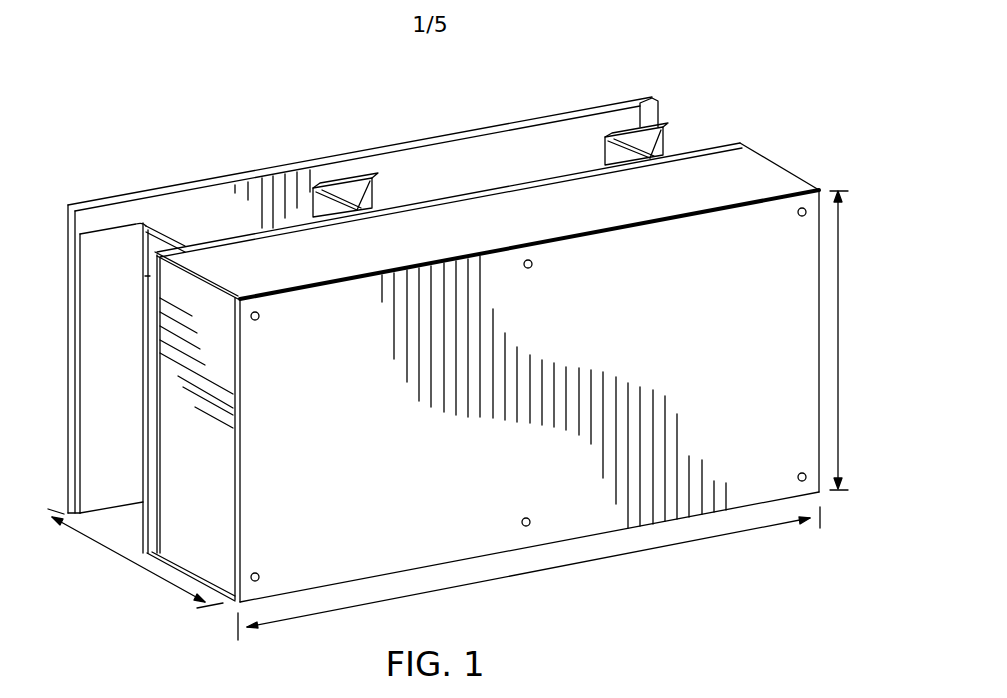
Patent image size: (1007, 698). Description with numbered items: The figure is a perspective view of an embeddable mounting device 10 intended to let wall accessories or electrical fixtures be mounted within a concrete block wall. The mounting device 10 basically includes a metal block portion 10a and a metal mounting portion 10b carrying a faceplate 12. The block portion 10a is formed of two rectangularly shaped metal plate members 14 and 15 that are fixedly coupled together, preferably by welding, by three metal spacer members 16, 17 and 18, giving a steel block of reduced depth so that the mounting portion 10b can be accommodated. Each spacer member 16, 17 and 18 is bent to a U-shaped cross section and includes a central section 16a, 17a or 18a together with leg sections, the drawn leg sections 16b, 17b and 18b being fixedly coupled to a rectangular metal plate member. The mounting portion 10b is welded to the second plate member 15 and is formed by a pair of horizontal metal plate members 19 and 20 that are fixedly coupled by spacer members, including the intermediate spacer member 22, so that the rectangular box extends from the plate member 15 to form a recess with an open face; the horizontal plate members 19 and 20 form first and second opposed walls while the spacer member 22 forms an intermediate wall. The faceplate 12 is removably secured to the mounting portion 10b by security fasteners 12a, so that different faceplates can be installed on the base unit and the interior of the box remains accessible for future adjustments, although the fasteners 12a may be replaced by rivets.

The embeddable mounting device 10 is at (706, 60).
The metal block portion 10a is at (753, 133).
The metal mounting portion 10b is at (833, 176).
The faceplate 12 is at (255, 449).
The security fasteners 12a is at (259, 320).
The first rectangularly shaped metal plate member 14 is at (212, 172).
The second rectangularly shaped metal plate member 15 is at (440, 192).
The metal spacer member 16 is at (163, 218).
The central section 16a is at (176, 236).
The first leg section 16b is at (103, 232).
The metal spacer member 17 is at (307, 192).
The central section 17a is at (357, 197).
The first leg section 17b is at (352, 182).
The metal spacer member 18 is at (594, 146).
The central section 18a is at (661, 130).
The first leg section 18b is at (637, 124).
The horizontal metal plate member 19 is at (372, 238).
The horizontal metal plate member 20 is at (200, 563).
The metal spacer member 22 is at (175, 398).